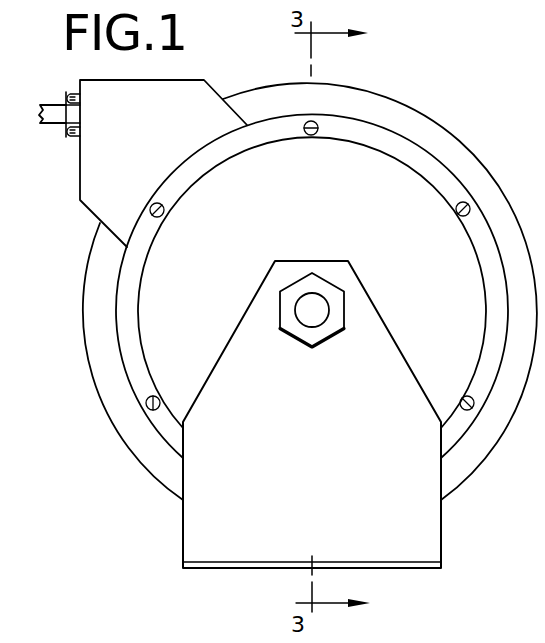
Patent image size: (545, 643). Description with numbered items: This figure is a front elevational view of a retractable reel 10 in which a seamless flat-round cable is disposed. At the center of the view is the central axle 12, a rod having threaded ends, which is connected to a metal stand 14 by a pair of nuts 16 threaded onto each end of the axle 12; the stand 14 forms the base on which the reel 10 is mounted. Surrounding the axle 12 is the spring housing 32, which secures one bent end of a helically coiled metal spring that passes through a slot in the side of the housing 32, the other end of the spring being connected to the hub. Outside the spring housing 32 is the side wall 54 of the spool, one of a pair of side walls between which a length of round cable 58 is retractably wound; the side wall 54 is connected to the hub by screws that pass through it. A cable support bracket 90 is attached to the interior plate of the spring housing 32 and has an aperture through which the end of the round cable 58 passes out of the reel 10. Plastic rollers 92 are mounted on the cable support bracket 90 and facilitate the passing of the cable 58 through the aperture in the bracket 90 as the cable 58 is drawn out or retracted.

The retractable reel 10 is at (390, 70).
The central axle 12 is at (314, 308).
The metal stand 14 is at (330, 477).
The nuts 16 is at (328, 327).
The spring housing 32 is at (330, 217).
The side wall 54 is at (404, 123).
The round cable 58 is at (53, 126).
The cable support bracket 90 is at (163, 107).
The plastic rollers 92 is at (72, 96).